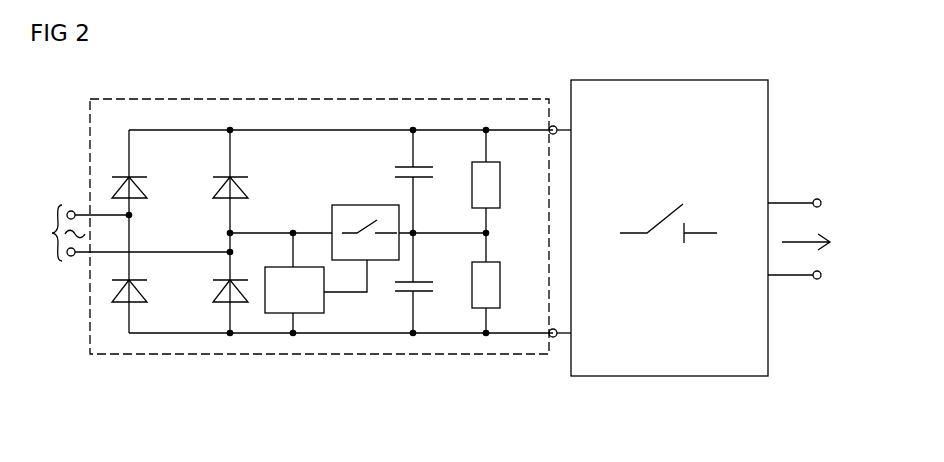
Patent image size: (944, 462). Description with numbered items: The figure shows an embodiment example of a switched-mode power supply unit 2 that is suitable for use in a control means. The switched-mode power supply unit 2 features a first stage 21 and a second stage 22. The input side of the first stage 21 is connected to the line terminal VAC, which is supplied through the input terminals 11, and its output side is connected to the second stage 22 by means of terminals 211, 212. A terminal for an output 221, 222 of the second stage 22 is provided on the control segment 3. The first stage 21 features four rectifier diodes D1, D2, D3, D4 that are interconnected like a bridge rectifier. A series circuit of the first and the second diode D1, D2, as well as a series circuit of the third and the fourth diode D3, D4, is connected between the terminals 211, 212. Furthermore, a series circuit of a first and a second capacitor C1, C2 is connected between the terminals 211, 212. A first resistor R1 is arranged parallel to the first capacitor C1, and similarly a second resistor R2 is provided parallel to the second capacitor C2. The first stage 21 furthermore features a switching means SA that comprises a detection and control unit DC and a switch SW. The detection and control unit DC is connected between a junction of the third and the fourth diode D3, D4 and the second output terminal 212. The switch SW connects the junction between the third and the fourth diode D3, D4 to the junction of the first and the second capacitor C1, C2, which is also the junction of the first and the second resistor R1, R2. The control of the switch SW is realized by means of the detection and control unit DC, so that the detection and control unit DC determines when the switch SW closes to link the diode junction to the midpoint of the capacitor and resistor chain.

The switched-mode power supply unit 2 is at (598, 50).
The AC input terminals 11 is at (68, 210).
The line terminal VAC is at (49, 233).
The first stage 21 is at (445, 355).
The terminal 211 is at (553, 125).
The second output terminal 212 is at (553, 338).
The second stage 22 is at (680, 377).
The output 221 is at (817, 199).
The output 222 is at (817, 279).
The control segment 3 is at (815, 243).
The first diode D1 is at (147, 190).
The second diode D2 is at (147, 293).
The third diode D3 is at (248, 190).
The fourth diode D4 is at (218, 295).
The first capacitor C1 is at (426, 172).
The second capacitor C2 is at (426, 287).
The first resistor R1 is at (500, 196).
The second resistor R2 is at (500, 289).
The switch SW is at (333, 205).
The switching means SA is at (331, 229).
The detection and control unit DC is at (324, 311).